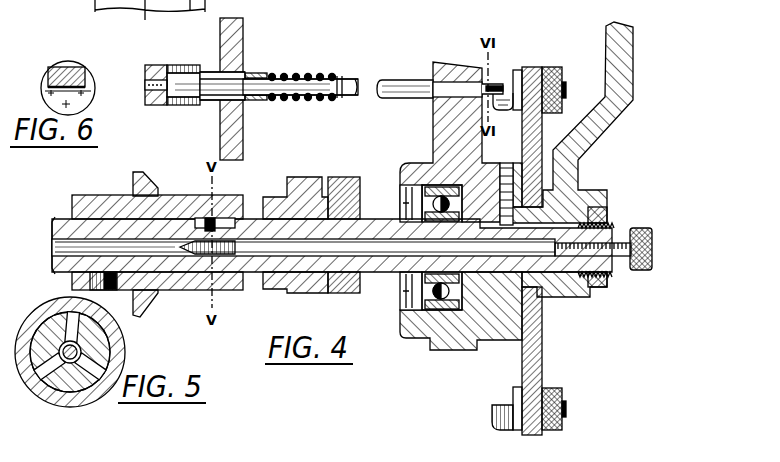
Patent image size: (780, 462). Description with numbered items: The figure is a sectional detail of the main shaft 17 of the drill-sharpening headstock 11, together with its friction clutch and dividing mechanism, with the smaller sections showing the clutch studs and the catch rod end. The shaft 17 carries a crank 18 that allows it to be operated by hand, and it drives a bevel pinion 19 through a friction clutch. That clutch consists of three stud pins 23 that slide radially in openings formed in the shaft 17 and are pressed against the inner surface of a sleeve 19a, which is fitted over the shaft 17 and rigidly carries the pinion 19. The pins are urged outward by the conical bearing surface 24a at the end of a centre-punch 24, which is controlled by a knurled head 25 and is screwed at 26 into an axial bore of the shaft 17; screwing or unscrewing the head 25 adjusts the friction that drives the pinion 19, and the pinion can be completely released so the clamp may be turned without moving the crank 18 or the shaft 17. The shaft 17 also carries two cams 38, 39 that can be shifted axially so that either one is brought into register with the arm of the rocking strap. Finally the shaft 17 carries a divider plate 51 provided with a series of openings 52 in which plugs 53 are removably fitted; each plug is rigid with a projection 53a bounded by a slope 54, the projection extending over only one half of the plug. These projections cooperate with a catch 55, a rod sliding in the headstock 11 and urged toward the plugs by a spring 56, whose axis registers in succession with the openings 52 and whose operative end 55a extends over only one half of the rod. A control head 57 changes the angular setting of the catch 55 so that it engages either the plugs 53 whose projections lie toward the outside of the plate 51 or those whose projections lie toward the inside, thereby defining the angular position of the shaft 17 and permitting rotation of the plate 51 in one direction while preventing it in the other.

In FIG. 4, the headstock 11 is at (243, 38).
In FIG. 4, the main shaft 17 is at (372, 226).
In FIG. 5, the main shaft 17 is at (72, 386).
In FIG. 4, the crank 18 is at (626, 80).
In FIG. 4, the bevel pinion 19 is at (144, 180).
In FIG. 4, the sleeve 19a is at (176, 201).
In FIG. 5, the sleeve 19a is at (33, 318).
In FIG. 4, the stud pins 23 is at (224, 217).
In FIG. 5, the stud pins 23 is at (45, 380).
In FIG. 4, the centre-punch 24 is at (388, 247).
In FIG. 5, the centre-punch 24 is at (78, 352).
In FIG. 4, the conical bearing surface 24a is at (200, 250).
In FIG. 4, the knurled head 25 is at (641, 270).
In FIG. 4, the screw thread 26 is at (612, 228).
In FIG. 4, the cam 38 is at (292, 185).
In FIG. 4, the cam 39 is at (345, 185).
In FIG. 4, the divider plate 51 is at (542, 348).
In FIG. 4, the openings 52 is at (531, 96).
In FIG. 4, the plugs 53 is at (515, 400).
In FIG. 4, the projection 53a is at (505, 110).
In FIG. 4, the slope 54 is at (494, 410).
In FIG. 4, the catch 55 is at (392, 84).
In FIG. 6, the catch 55 is at (80, 95).
In FIG. 4, the operative end 55a is at (498, 85).
In FIG. 6, the operative end 55a is at (62, 68).
In FIG. 4, the spring 56 is at (303, 74).
In FIG. 4, the control head 57 is at (152, 105).